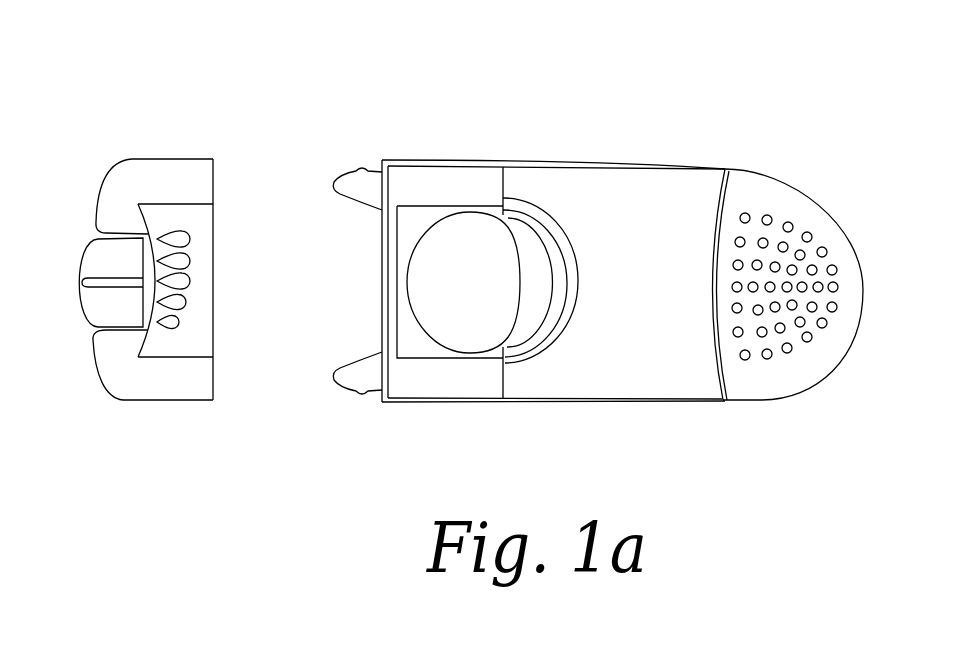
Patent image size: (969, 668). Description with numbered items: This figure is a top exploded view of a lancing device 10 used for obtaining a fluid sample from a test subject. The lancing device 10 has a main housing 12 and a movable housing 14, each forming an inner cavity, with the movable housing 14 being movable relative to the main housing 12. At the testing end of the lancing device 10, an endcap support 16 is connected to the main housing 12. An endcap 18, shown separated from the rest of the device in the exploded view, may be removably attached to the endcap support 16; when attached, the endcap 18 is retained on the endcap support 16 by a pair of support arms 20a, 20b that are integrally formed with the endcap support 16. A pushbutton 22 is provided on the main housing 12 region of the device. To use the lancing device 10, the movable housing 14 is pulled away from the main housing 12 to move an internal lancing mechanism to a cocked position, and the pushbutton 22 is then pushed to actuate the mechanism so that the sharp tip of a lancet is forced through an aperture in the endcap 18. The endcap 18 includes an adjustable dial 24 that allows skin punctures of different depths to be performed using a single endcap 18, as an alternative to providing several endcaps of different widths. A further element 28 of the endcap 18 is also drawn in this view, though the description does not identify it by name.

The lancing device 10 is at (152, 50).
The main housing 12 is at (660, 182).
The movable housing 14 is at (792, 190).
The endcap support 16 is at (385, 160).
The endcap 18 is at (108, 145).
The support arm 20a is at (350, 380).
The support arm 20b is at (348, 178).
The pushbutton 22 is at (483, 243).
The adjustable dial 24 is at (92, 312).
The inner plate with vent slots 28 is at (207, 340).